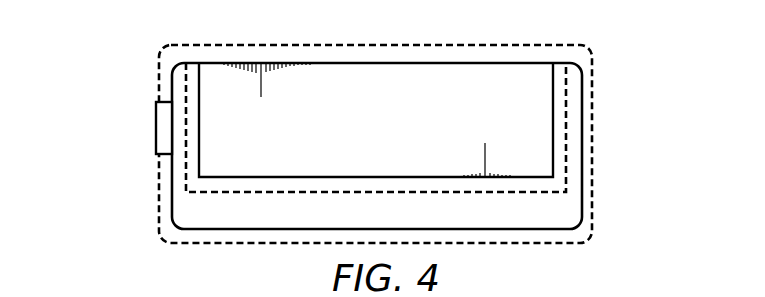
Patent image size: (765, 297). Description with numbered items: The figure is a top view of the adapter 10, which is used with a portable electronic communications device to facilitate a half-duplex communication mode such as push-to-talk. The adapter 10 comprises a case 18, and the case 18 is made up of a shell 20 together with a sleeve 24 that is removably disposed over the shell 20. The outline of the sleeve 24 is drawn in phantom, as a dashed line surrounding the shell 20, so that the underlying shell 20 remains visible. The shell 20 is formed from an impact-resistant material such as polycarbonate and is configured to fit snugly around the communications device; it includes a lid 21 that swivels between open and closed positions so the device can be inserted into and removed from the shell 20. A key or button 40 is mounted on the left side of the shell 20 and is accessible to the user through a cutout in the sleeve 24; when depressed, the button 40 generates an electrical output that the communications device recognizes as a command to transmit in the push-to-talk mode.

The adapter 10 is at (112, 35).
The case 18 is at (594, 200).
The shell 20 is at (186, 211).
The lid 21 is at (410, 100).
The sleeve 24 is at (592, 55).
The button 40 is at (156, 120).